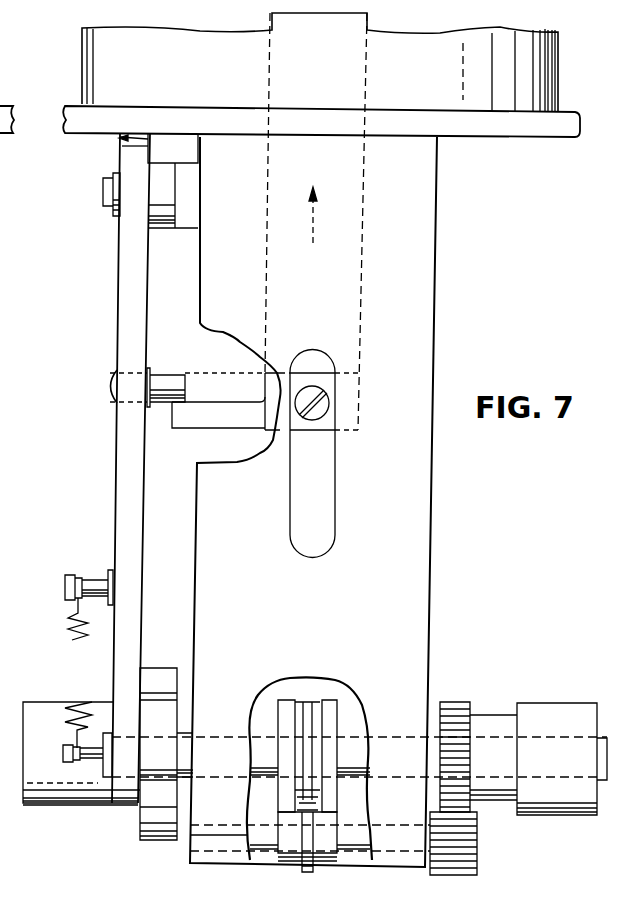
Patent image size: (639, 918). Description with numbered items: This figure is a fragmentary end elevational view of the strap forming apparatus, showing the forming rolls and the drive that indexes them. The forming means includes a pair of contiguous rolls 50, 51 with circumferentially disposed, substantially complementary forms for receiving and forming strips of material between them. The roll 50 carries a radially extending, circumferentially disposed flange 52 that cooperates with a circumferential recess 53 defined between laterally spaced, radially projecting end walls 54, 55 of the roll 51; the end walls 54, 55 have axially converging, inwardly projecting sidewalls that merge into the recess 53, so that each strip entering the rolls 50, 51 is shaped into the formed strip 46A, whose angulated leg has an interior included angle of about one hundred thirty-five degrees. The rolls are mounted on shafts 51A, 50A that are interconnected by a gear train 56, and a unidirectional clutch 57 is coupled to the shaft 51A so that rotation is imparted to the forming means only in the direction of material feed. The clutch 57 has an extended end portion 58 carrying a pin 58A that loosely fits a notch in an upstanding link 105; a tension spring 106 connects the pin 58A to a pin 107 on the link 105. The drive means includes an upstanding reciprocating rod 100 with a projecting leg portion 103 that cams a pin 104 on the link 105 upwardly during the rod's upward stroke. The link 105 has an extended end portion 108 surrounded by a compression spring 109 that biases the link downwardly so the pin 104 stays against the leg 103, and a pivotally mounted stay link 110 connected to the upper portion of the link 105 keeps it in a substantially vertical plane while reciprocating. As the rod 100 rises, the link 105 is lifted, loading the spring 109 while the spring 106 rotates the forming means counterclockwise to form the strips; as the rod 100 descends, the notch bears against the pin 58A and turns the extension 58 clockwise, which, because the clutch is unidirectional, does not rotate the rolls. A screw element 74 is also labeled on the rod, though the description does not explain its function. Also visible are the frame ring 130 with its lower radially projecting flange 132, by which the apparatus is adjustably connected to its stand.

The reciprocating rod 100 is at (272, 20).
The ring 130 is at (545, 88).
The lower flange 132 is at (581, 122).
The extended end portion 108 is at (118, 141).
The compression spring 109 is at (150, 146).
The stay link 110 is at (190, 220).
The pin 104 is at (167, 375).
The screw 74 is at (327, 392).
The projecting leg portion 103 is at (203, 425).
The upstanding link 105 is at (118, 492).
The pin 107 is at (65, 582).
The tension spring 106 is at (72, 617).
The extended end portion 58 is at (160, 668).
The unidirectional clutch 57 is at (114, 811).
The pin 58A is at (65, 752).
The roll 51 is at (318, 695).
The shaft 51A is at (260, 742).
The end wall 54 is at (275, 703).
The end wall 55 is at (333, 718).
The circumferential recess 53 is at (312, 707).
The formed strip 46A is at (318, 805).
The flange 52 is at (308, 833).
The roll 50 is at (292, 860).
The shaft 50A is at (263, 833).
The gear train 56 is at (458, 702).